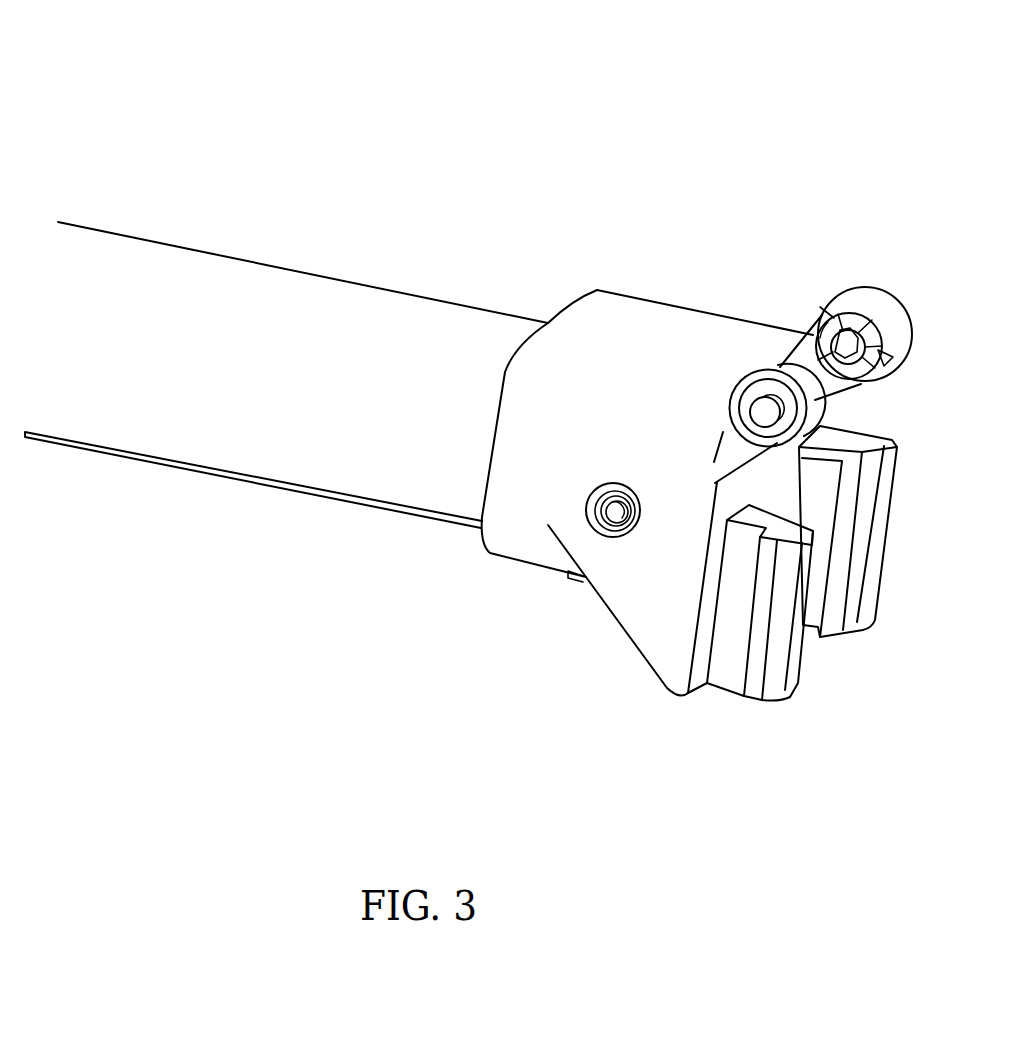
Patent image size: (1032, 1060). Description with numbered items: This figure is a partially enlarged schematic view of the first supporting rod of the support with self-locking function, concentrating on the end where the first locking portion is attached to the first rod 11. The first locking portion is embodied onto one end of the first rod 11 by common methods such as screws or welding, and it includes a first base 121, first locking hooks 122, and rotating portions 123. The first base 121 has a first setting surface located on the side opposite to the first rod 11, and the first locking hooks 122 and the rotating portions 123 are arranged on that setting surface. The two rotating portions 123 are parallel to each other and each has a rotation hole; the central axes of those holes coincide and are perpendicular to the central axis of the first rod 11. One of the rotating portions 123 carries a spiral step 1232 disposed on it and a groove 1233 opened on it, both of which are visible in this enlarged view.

The first rod 11 is at (300, 482).
The first base 121 is at (586, 343).
The first locking hook 122 is at (762, 694).
The rotating portion 123 is at (897, 318).
The spiral step 1232 is at (846, 322).
The groove 1233 is at (888, 367).